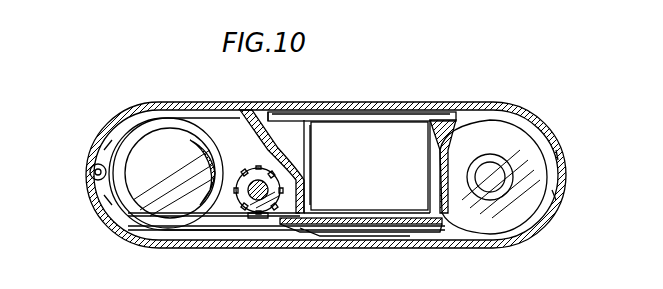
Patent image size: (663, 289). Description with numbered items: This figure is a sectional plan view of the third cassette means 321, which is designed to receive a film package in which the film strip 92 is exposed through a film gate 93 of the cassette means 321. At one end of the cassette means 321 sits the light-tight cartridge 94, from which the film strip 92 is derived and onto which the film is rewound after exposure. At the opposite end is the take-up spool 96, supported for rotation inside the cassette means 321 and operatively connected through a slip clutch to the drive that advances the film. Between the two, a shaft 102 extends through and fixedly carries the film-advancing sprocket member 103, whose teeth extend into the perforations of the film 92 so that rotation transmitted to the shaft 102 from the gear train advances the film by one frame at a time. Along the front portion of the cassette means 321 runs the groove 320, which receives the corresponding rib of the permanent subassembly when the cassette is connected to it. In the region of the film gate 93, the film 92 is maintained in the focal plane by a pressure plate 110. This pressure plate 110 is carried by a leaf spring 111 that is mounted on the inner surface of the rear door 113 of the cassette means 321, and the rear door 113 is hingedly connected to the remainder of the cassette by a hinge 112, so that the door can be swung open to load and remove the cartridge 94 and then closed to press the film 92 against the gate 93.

The rear door 113 is at (448, 244).
The cassette means 321 is at (563, 152).
The take-up spool 96 is at (175, 228).
The hinge 112 is at (90, 173).
The film strip 92 is at (222, 216).
The shaft 102 is at (256, 180).
The groove 320 is at (361, 112).
The film gate 93 is at (364, 210).
The pressure plate 110 is at (382, 232).
The leaf spring 111 is at (322, 228).
The film-advancing sprocket member 103 is at (266, 218).
The light-tight cartridge 94 is at (513, 138).